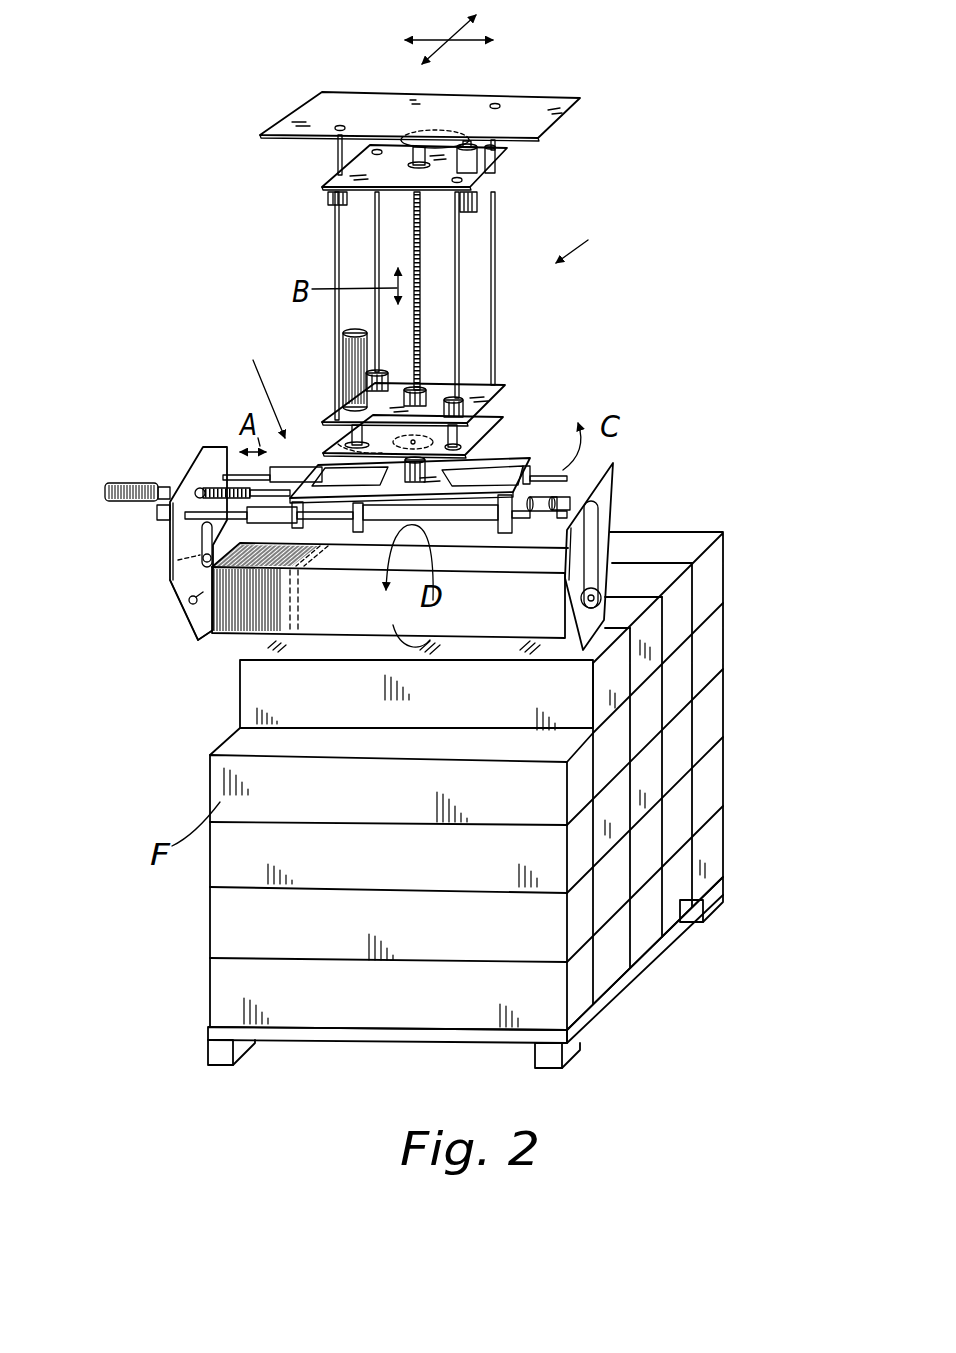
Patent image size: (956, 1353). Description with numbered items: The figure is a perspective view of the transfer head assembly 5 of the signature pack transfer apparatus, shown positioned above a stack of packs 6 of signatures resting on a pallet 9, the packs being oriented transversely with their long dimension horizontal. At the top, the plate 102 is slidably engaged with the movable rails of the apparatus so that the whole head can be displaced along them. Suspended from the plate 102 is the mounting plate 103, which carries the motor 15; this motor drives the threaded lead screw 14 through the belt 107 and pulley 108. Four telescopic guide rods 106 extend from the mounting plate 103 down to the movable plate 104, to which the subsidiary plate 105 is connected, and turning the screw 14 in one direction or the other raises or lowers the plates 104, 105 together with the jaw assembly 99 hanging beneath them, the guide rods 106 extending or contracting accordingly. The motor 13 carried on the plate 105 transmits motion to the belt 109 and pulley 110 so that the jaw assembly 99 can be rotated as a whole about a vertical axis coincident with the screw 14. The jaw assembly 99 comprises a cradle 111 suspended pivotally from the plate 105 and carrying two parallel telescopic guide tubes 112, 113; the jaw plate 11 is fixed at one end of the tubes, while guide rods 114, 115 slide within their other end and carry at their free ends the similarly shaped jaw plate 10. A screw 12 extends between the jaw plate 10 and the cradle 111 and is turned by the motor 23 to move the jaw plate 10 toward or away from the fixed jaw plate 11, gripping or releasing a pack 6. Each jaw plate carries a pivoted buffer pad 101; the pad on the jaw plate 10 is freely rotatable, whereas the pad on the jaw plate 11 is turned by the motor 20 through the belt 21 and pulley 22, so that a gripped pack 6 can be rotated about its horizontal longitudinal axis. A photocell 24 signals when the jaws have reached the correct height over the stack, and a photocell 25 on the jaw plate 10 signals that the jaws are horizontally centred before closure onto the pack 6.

The transfer head assembly 5 is at (581, 237).
The pack of signatures 6 is at (713, 590).
The pallet 9 is at (618, 978).
The jaw plate 10 is at (176, 584).
The jaw plate 11 is at (613, 504).
The screw 12 is at (222, 488).
The motor 13 is at (348, 362).
The threaded lead screw 14 is at (424, 332).
The motor 15 is at (478, 199).
The motor 20 is at (572, 502).
The belt 21 is at (600, 546).
The pulley 22 is at (596, 595).
The motor 23 is at (124, 496).
The photocell 24 is at (167, 573).
The photocell 25 is at (195, 620).
The jaw assembly 99 is at (256, 383).
The buffer pad 101 is at (198, 641).
The plate 102 is at (282, 124).
The mounting plate 103 is at (324, 180).
The movable plate 104 is at (474, 380).
The subsidiary plate 105 is at (518, 413).
The telescopic guide rods 106 is at (333, 239).
The belt 107 is at (442, 139).
The pulley 108 is at (412, 138).
The belt 109 is at (330, 446).
The pulley 110 is at (470, 440).
The cradle 111 is at (550, 452).
The telescopic guide tube 112 is at (586, 478).
The telescopic guide tube 113 is at (550, 520).
The guide rod 114 is at (227, 447).
The guide rod 115 is at (186, 533).